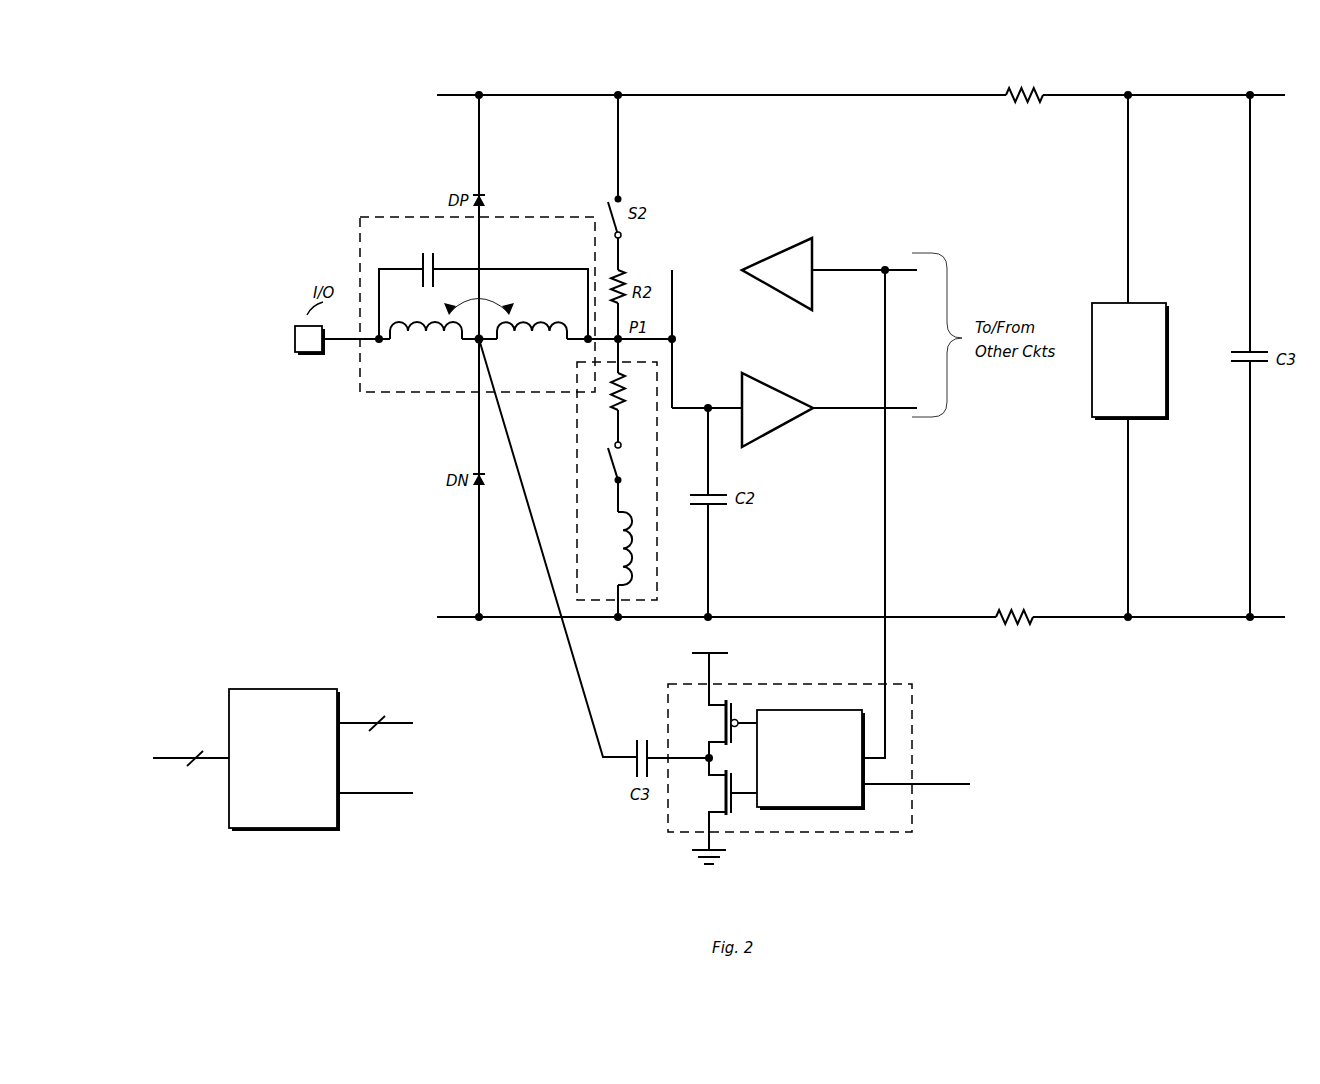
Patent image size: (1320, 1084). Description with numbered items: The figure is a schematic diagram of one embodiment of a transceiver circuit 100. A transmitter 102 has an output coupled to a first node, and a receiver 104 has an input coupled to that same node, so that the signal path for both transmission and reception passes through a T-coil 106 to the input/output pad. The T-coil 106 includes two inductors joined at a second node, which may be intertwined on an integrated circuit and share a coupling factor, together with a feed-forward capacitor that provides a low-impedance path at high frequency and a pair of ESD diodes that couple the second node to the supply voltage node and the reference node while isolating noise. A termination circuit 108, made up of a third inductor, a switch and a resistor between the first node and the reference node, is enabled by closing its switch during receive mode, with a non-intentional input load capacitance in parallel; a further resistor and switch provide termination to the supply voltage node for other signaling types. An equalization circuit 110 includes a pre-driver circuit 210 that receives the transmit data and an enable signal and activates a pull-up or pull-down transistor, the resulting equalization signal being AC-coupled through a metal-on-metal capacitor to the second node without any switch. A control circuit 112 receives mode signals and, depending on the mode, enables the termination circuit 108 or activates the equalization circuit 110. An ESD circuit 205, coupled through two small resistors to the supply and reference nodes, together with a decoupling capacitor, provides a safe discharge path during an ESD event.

The transceiver circuit 100 is at (787, 87).
The transmitter 102 is at (810, 238).
The receiver 104 is at (742, 373).
The T-coil 106 is at (360, 217).
The termination circuit 108 is at (657, 565).
The equalization circuit 110 is at (912, 684).
The control circuit 112 is at (333, 760).
The ESD circuit 205 is at (1130, 361).
The pre-driver circuit 210 is at (811, 760).